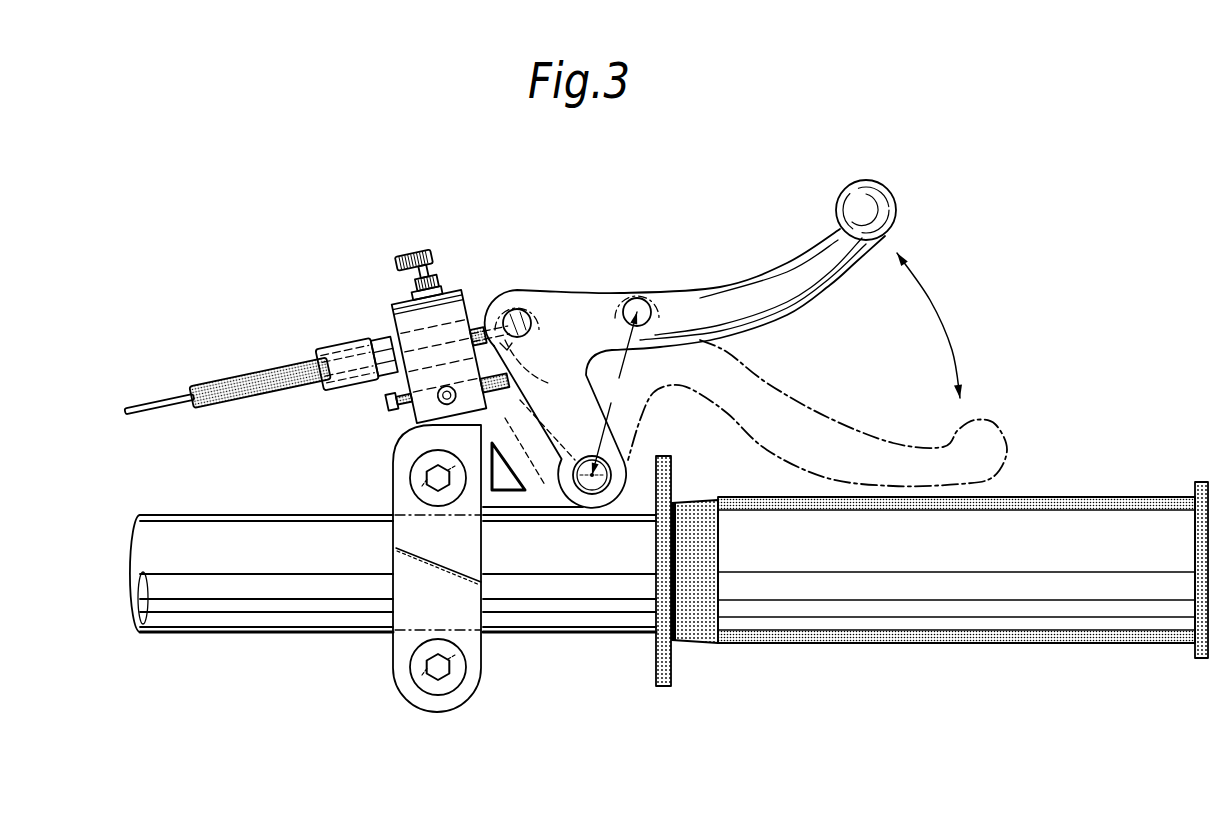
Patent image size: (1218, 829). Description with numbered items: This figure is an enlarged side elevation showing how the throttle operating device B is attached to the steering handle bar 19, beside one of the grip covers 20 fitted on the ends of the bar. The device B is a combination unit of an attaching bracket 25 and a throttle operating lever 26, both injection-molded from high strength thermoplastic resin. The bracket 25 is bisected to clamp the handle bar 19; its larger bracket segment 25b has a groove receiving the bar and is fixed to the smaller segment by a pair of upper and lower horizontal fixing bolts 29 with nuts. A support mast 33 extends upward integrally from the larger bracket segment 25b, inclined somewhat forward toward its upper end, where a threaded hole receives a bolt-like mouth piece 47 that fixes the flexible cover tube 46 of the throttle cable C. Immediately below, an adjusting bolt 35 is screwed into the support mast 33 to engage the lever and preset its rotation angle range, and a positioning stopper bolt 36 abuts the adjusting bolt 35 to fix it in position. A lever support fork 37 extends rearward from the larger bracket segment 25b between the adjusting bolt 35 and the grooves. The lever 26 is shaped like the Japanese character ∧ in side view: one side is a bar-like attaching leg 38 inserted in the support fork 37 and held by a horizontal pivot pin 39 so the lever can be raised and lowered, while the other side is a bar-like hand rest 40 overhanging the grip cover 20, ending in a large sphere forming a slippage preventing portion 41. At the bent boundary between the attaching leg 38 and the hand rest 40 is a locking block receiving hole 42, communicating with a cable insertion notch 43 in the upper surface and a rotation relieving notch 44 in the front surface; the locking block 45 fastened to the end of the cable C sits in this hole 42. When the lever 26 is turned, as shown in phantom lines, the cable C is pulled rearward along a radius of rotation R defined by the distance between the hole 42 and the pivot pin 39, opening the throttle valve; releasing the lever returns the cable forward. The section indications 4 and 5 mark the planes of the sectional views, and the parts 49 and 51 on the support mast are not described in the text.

The steering handle bar 19 is at (223, 533).
The grip cover 20 is at (925, 620).
The attaching bracket 25 is at (386, 480).
The larger bracket segment 25b is at (397, 560).
The throttle operating lever 26 is at (789, 256).
The fixing bolt 29 is at (440, 487).
The support mast 33 is at (395, 312).
The adjusting bolt 35 is at (383, 408).
The positioning stopper bolt 36 is at (448, 402).
The lever support fork 37 is at (525, 500).
The attaching leg 38 is at (583, 410).
The pivot pin 39 is at (597, 488).
The hand rest 40 is at (720, 297).
The slippage preventing portion 41 is at (883, 202).
The locking block receiving hole 42 is at (531, 330).
The cable insertion notch 43 is at (508, 287).
The rotation relieving notch 44 is at (508, 350).
The locking block 45 is at (530, 313).
The flexible cover tube 46 is at (240, 378).
The mouth piece 47 is at (330, 353).
The lock nut 49 is at (416, 285).
The adjusting knob 51 is at (398, 256).
The throttle operating device B is at (453, 288).
The throttle cable C is at (163, 400).
The radius of rotation R is at (614, 393).
The section line 4- 4 is at (405, 226).
The section line 5- 5 is at (850, 143).